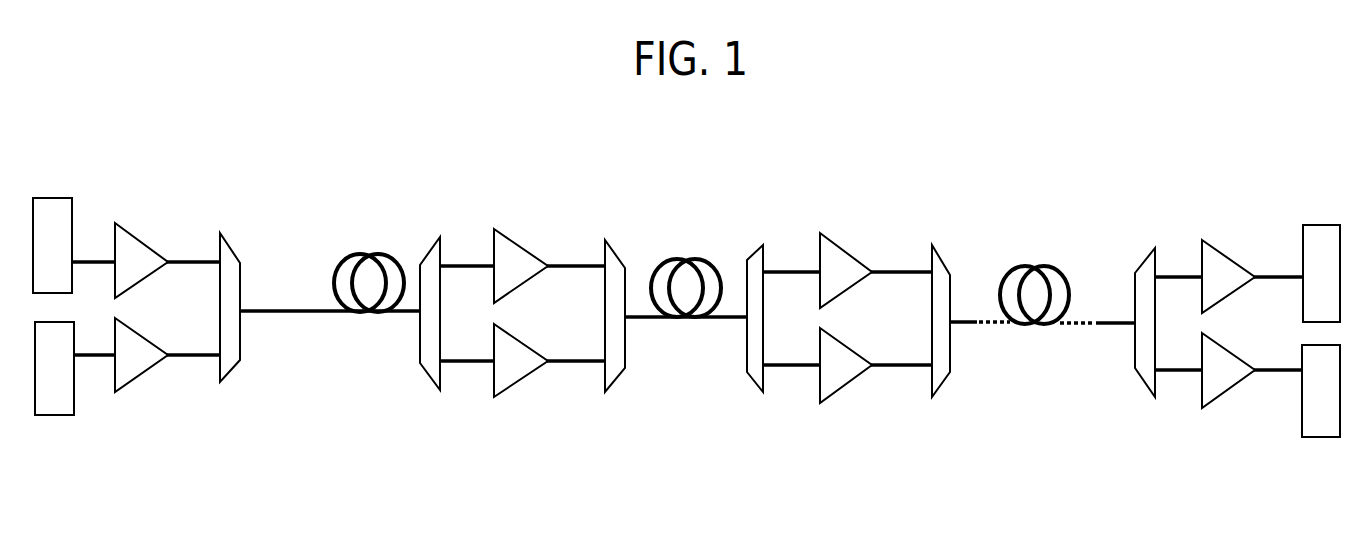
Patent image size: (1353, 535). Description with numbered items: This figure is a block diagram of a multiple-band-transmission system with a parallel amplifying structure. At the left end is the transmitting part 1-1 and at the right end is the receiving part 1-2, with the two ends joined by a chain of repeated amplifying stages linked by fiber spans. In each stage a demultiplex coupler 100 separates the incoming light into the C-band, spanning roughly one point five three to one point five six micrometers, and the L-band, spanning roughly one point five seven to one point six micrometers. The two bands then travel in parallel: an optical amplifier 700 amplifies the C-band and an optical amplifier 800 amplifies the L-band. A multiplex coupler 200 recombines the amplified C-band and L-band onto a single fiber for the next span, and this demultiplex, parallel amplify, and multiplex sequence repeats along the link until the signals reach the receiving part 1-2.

The transmitting part 1-1 is at (53, 296).
The receiving part 1-2 is at (1322, 319).
The demultiplex coupler 100 is at (793, 307).
The multiplex coupler 200 is at (614, 250).
The optical amplifier 700 is at (700, 277).
The optical amplifier 800 is at (700, 372).